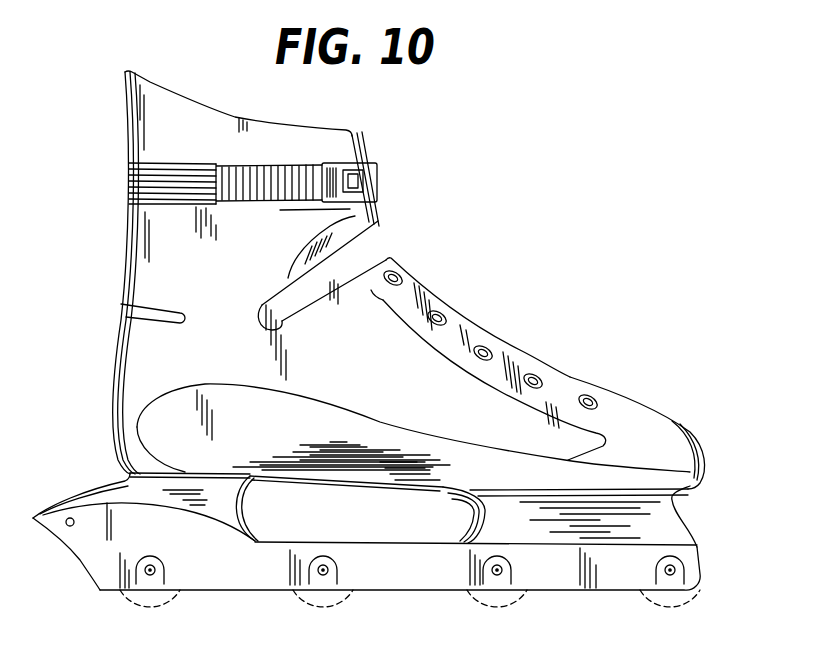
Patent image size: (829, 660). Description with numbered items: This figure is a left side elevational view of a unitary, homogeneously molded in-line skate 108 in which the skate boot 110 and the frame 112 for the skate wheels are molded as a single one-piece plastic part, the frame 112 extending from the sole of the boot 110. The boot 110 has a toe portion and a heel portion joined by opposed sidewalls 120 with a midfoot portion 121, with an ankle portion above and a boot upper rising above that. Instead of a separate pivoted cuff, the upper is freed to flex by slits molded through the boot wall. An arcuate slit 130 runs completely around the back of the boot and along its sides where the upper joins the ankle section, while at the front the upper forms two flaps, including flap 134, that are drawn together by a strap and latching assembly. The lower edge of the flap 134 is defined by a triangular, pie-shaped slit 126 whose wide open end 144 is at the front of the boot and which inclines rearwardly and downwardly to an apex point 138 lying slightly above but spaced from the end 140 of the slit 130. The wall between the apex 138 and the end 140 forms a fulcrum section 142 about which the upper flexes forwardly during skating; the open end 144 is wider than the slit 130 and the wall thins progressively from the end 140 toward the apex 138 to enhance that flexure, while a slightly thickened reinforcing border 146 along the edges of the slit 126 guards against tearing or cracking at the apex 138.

The unitary, homogeneously molded in-line skate 108 is at (577, 347).
The skate boot 110 is at (643, 417).
The frame 112 is at (663, 523).
The opposed sidewalls 120 is at (490, 425).
The midfoot portion 121 is at (410, 410).
The slit 126 is at (340, 283).
The arcuate slit 130 is at (124, 306).
The flap 134 is at (305, 162).
The apex point 138 is at (280, 312).
The ends of the slit 140 is at (183, 313).
The fulcrum section 142 is at (246, 339).
The open ends of the slits 144 is at (380, 247).
The reinforcing border 146 is at (332, 233).